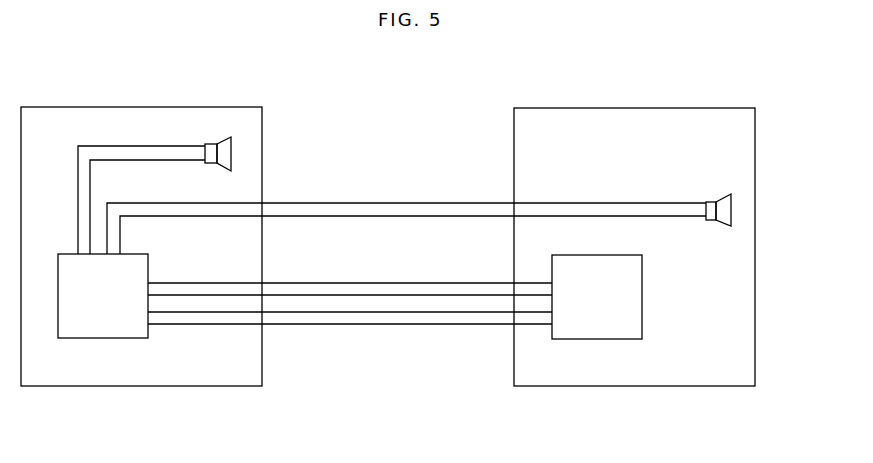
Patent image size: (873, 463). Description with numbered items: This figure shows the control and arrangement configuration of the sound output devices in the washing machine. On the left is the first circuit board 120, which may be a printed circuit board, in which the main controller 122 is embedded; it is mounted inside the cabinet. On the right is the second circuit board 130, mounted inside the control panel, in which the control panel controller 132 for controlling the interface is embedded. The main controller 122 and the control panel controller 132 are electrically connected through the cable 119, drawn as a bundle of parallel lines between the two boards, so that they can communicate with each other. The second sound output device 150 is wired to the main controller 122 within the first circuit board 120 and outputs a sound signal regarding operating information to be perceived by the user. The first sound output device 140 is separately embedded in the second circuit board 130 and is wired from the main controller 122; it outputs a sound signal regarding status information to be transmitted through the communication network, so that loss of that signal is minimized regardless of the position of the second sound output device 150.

The first circuit board 120 is at (52, 107).
The second circuit board 130 is at (718, 108).
The main controller 122 is at (107, 338).
The control panel controller 132 is at (597, 339).
The second sound output device 150 is at (232, 150).
The first sound output device 140 is at (732, 208).
The cable 119 is at (367, 324).